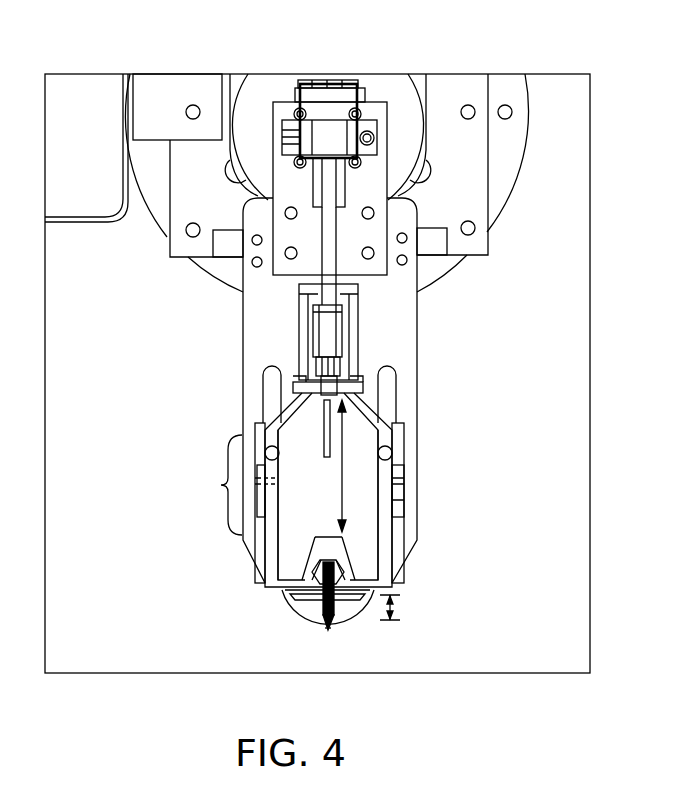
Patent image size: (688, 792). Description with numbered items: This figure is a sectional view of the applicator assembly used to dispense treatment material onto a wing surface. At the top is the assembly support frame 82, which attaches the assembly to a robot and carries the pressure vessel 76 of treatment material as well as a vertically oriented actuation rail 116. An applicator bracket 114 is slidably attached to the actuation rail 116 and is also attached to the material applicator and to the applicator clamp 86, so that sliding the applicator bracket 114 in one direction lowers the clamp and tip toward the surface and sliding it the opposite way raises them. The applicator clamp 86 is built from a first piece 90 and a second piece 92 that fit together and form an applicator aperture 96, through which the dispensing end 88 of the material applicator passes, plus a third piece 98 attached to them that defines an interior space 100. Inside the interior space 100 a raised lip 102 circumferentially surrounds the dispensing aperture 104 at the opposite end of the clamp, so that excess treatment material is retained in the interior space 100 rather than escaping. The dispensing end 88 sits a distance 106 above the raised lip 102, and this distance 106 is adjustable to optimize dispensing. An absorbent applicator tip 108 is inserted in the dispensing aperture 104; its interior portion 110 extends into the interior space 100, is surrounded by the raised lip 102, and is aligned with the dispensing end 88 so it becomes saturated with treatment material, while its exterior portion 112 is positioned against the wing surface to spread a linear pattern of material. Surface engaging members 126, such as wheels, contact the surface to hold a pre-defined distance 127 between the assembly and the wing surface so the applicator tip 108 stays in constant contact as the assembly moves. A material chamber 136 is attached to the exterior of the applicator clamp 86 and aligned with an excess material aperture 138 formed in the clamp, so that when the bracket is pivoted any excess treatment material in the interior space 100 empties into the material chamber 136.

The pressure vessel 76 is at (100, 102).
The assembly support frame 82 is at (505, 85).
The applicator clamp 86 is at (383, 378).
The dispensing end 88 is at (330, 240).
The first piece 90 is at (352, 333).
The second piece 92 is at (307, 332).
The applicator aperture 96 is at (337, 295).
The third piece 98 is at (385, 548).
The interior space 100 is at (262, 487).
The raised lip 102 is at (345, 567).
The dispensing aperture 104 is at (322, 603).
The distance 106 is at (343, 480).
The applicator tip 108 is at (300, 607).
The interior portion 110 is at (350, 610).
The exterior portion 112 is at (330, 630).
The applicator bracket 114 is at (377, 150).
The actuation rail 116 is at (313, 83).
The surface engaging member 126 is at (343, 610).
The pre-defined distance 127 is at (400, 608).
The material chamber 136 is at (221, 485).
The excess material aperture 138 is at (293, 502).